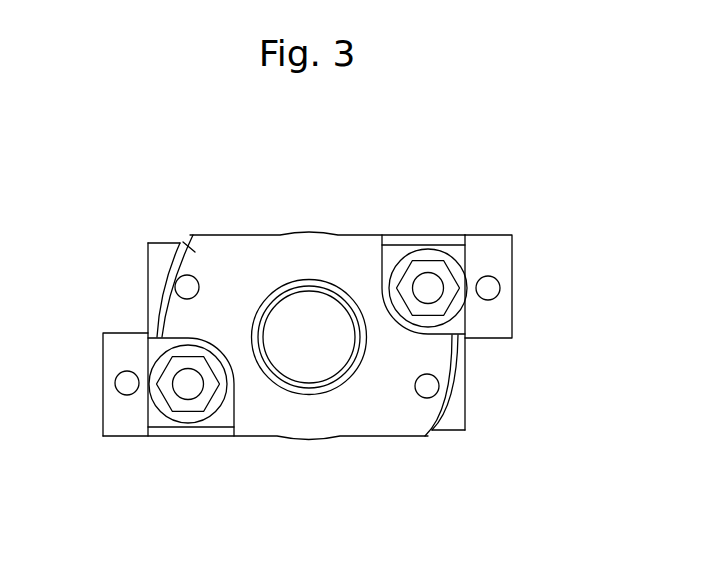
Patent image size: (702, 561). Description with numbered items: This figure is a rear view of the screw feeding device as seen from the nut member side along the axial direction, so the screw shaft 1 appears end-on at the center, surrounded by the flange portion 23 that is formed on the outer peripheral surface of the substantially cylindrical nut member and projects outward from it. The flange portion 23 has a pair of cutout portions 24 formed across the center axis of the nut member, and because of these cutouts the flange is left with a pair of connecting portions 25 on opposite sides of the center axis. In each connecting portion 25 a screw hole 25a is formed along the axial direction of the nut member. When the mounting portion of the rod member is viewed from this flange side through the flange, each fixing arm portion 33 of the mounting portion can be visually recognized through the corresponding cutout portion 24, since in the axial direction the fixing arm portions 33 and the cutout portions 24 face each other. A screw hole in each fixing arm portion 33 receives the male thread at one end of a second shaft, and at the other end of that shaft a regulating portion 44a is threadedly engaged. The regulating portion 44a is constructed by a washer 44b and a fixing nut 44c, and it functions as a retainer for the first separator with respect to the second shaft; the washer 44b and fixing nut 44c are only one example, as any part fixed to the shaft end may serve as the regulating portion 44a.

The screw shaft 1 is at (308, 300).
The flange portion 23 is at (234, 232).
The cutout portions 24 is at (391, 246).
The connecting portions 25 is at (182, 240).
The screw hole 25a is at (186, 287).
The fixing arm portions 33 is at (117, 418).
The regulating portion 44a is at (402, 170).
The washer 44b is at (455, 258).
The fixing nut 44c is at (424, 265).